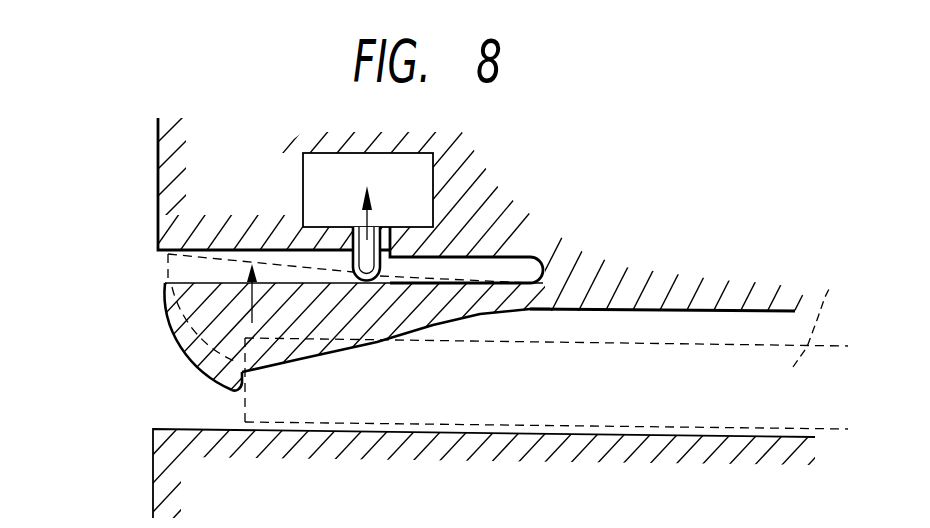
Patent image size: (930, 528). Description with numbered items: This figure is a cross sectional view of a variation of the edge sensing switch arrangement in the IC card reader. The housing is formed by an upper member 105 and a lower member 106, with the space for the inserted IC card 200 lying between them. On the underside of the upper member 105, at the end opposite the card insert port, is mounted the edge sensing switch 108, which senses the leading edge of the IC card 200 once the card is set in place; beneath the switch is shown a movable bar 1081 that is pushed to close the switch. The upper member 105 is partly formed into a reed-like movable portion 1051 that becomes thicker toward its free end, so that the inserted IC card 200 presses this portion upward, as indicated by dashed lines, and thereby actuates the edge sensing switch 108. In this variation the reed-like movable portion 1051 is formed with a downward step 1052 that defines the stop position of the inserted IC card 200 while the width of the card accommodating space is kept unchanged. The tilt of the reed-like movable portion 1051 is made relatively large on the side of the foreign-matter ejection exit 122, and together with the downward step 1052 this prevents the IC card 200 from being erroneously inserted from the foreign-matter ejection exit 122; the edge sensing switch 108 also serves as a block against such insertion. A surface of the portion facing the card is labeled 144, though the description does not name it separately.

The upper member 105 is at (176, 203).
The pin 1081 is at (362, 247).
The edge sensing switch 108 is at (408, 170).
The contact surface 144 is at (675, 326).
The IC card 200 is at (836, 321).
The reed-like movable portion 1051 is at (166, 318).
The foreign-matter ejection exit 122 is at (162, 372).
The downward step 1052 is at (230, 385).
The lower member 106 is at (168, 445).